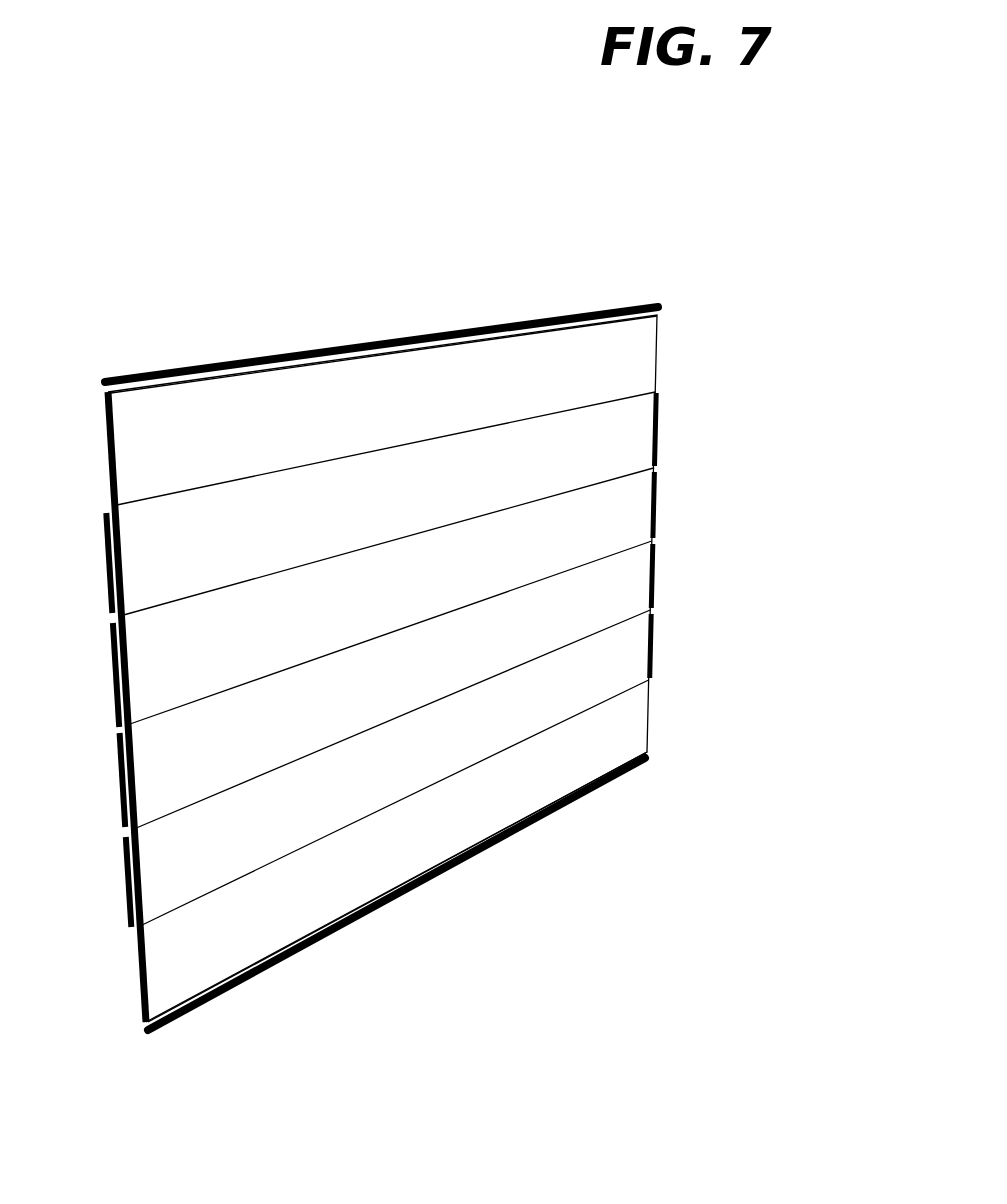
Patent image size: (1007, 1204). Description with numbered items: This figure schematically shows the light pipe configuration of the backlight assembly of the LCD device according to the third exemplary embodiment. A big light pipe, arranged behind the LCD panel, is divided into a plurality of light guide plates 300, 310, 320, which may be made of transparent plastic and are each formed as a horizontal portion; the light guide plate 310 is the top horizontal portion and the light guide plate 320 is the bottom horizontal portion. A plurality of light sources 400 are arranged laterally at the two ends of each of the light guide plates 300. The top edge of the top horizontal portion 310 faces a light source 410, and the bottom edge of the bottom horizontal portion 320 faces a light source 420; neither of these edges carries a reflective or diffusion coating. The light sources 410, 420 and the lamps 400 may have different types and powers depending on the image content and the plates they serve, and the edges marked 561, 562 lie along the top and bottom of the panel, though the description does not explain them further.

The light guide plates 300 is at (624, 655).
The top horizontal portion 310 is at (123, 448).
The bottom horizontal portion 320 is at (140, 985).
The light sources 400 is at (685, 417).
The light source 410 is at (327, 332).
The light source 420 is at (508, 859).
The upper edge reflector 561 is at (564, 336).
The lower edge reflector 562 is at (643, 752).